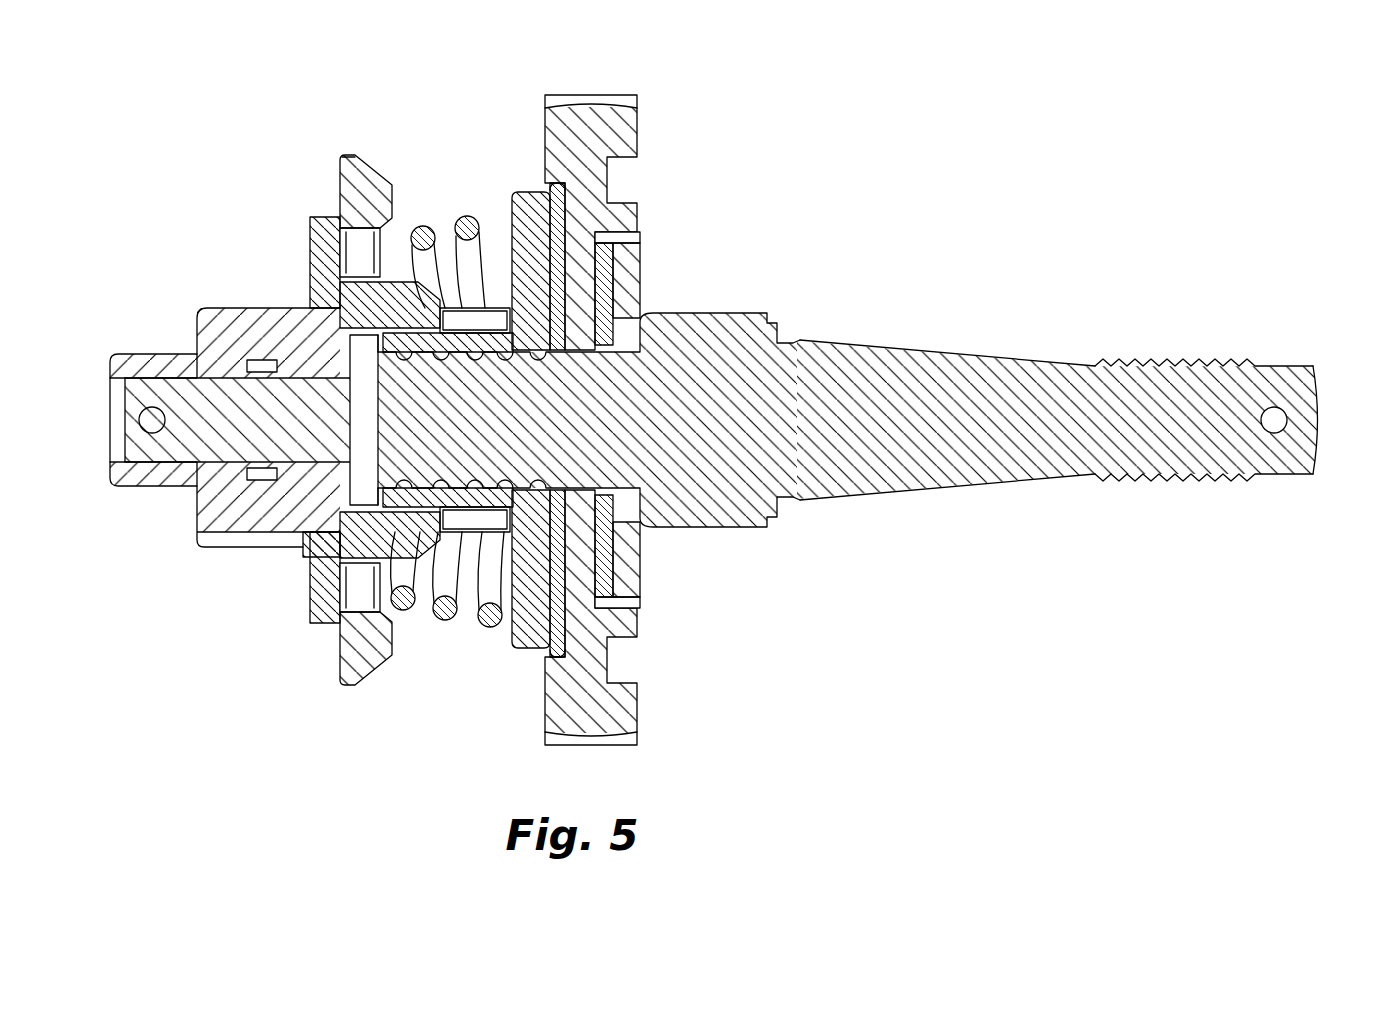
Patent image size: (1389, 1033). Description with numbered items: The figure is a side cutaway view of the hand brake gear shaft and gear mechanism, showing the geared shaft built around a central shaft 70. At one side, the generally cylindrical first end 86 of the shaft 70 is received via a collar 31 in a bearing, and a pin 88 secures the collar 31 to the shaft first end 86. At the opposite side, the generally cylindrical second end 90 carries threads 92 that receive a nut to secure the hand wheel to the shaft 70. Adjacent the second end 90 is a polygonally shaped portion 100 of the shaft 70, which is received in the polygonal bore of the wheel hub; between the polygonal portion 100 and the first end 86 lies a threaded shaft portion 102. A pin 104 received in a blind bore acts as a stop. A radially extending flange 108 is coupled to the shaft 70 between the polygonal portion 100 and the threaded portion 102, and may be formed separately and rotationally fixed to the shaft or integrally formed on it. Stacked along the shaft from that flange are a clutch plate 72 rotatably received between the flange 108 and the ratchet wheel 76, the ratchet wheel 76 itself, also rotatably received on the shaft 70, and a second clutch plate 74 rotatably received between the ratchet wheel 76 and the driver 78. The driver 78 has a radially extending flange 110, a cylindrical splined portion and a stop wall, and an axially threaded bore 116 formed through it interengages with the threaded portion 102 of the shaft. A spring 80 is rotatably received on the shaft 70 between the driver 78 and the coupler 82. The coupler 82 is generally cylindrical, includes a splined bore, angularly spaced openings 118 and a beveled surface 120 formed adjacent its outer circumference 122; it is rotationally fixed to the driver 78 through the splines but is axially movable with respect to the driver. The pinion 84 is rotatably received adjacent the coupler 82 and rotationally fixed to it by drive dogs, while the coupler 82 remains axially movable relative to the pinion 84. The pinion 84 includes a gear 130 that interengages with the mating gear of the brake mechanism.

The collar 31 is at (143, 488).
The shaft 70 is at (760, 310).
The clutch plate 72 is at (640, 306).
The clutch plate 74 is at (513, 191).
The ratchet wheel 76 is at (597, 100).
The driver 78 is at (509, 250).
The spring 80 is at (421, 227).
The coupler 82 is at (352, 686).
The pinion 84 is at (320, 213).
The first end 86 is at (140, 392).
The pin 88 is at (139, 420).
The second end 90 is at (1318, 386).
The threads 92 is at (1166, 364).
The polygonally shaped portion 100 is at (964, 352).
The threaded shaft portion 102 is at (616, 238).
The pin 104 is at (352, 388).
The radial extending flange 108 is at (640, 238).
The radially extending flange 110 is at (533, 187).
The axially threaded bore 116 is at (483, 360).
The angularly spaced openings 118 is at (340, 210).
The beveled surface 120 is at (383, 172).
The outer circumference 122 is at (352, 155).
The gear 130 is at (225, 307).